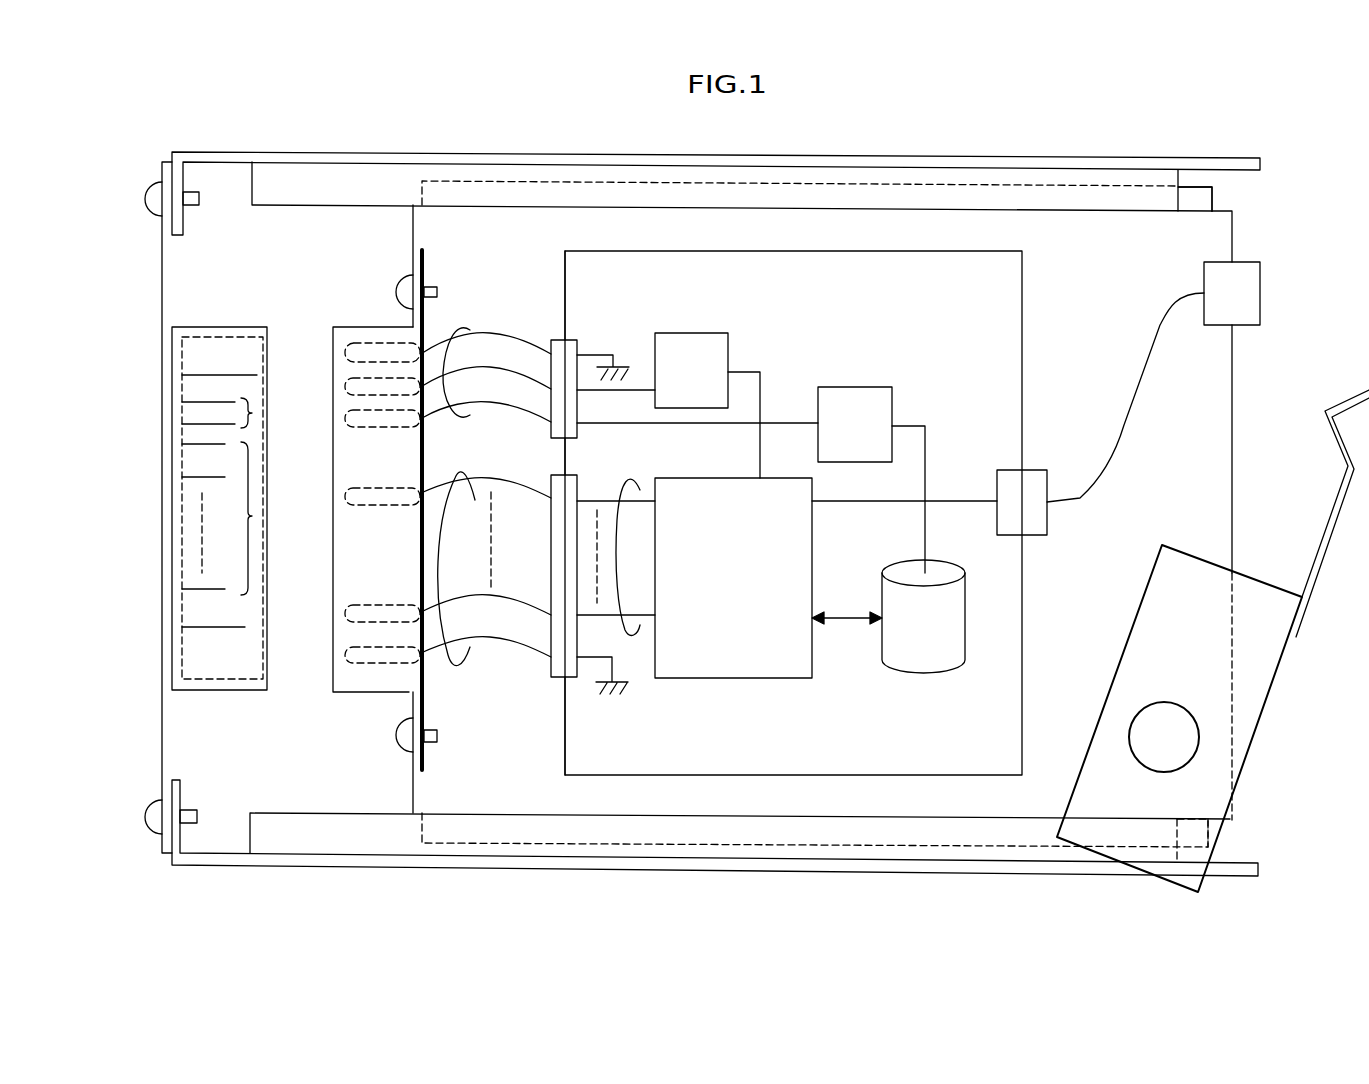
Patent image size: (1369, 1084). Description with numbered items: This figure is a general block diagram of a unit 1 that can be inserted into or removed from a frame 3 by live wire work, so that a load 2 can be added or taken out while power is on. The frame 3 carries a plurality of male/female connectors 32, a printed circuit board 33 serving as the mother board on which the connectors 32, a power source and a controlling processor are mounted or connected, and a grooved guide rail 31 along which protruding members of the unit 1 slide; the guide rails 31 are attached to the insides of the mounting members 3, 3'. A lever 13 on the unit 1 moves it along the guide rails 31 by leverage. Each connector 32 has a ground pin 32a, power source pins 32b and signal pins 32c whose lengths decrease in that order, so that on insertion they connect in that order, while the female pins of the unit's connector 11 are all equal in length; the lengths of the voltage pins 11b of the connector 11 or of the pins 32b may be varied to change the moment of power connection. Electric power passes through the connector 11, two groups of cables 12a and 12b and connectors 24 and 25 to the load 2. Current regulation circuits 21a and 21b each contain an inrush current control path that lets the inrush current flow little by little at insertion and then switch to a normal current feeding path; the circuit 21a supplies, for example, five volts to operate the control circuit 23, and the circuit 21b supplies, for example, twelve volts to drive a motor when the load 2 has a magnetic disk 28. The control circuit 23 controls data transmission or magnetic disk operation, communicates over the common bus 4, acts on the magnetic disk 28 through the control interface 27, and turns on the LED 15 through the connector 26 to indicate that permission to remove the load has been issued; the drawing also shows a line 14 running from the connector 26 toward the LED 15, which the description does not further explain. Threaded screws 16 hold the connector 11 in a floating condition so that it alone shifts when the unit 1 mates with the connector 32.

The unit 1 is at (1233, 377).
The load 2 is at (703, 775).
The frame 3 is at (716, 164).
The mounting member 3' is at (719, 862).
The common bus 4 is at (627, 480).
The connector 11 is at (396, 738).
The voltage pins 11b is at (385, 430).
The cables 12a is at (470, 648).
The cables 12b is at (470, 328).
The lever 13 is at (1258, 732).
The cable 14 is at (1123, 428).
The LED 15 is at (1260, 280).
The threaded screws 16 is at (1212, 197).
The current regulation circuit 21a is at (697, 333).
The current regulation circuit 21b is at (870, 387).
The control circuit 23 is at (735, 678).
The connector 24 is at (551, 340).
The connector 25 is at (553, 680).
The connector 26 is at (1042, 468).
The control interface 27 is at (850, 622).
The magnetic disk 28 is at (935, 672).
The guide rail 31 is at (327, 167).
The connector 32 is at (207, 325).
The ground pin 32a is at (197, 375).
The power source pins 32b is at (252, 413).
The signal pins 32c is at (252, 516).
The printed circuit board 33 is at (160, 722).